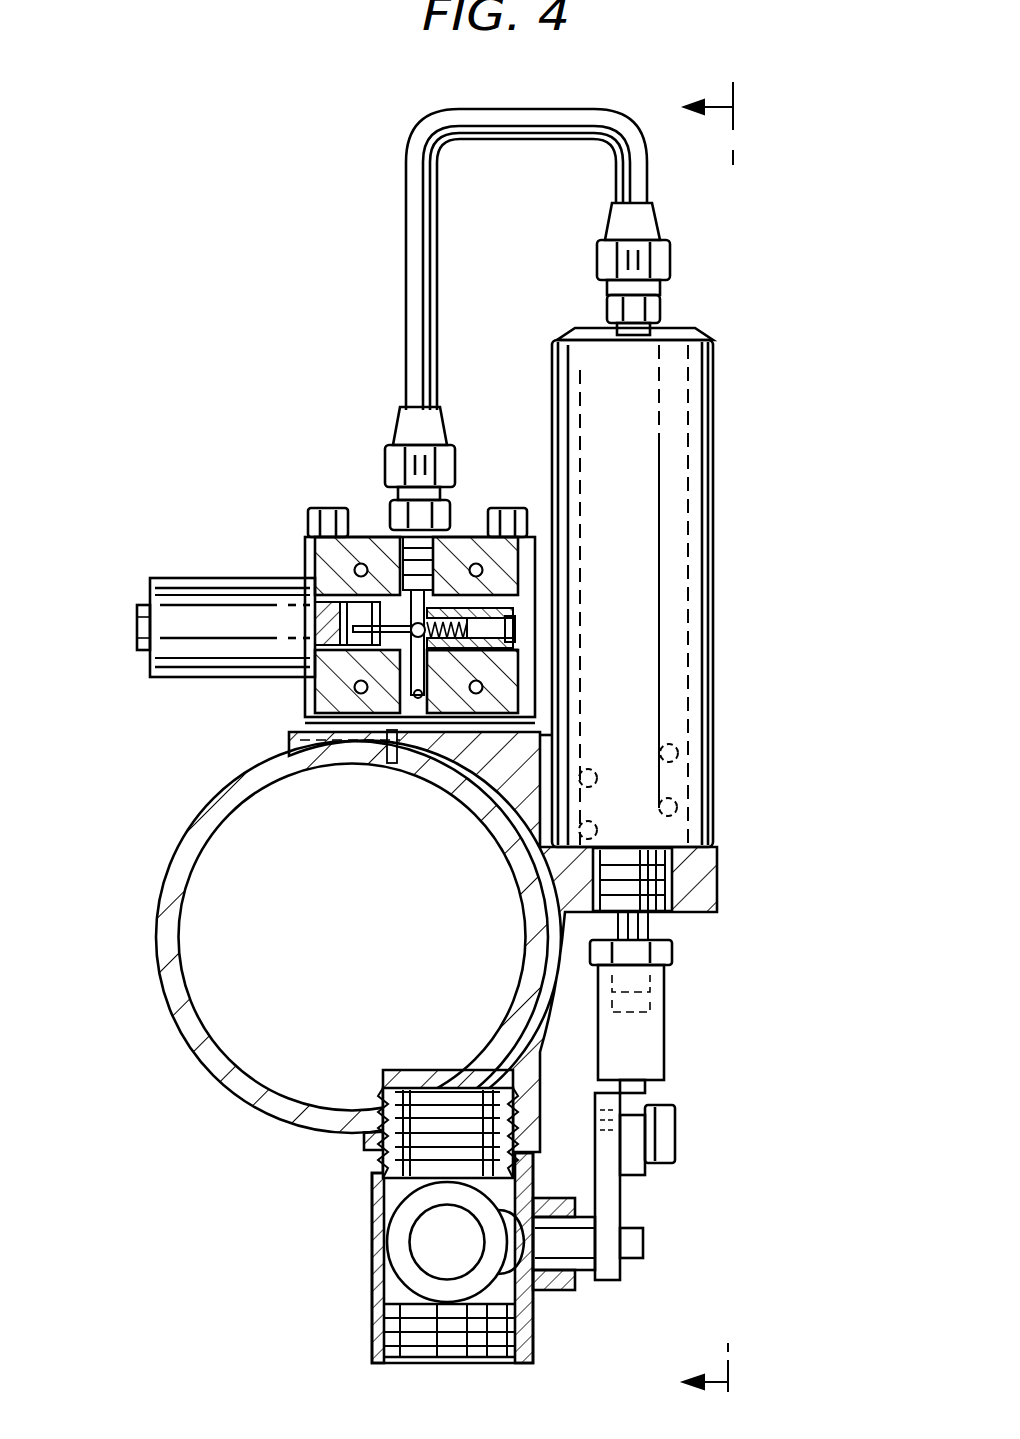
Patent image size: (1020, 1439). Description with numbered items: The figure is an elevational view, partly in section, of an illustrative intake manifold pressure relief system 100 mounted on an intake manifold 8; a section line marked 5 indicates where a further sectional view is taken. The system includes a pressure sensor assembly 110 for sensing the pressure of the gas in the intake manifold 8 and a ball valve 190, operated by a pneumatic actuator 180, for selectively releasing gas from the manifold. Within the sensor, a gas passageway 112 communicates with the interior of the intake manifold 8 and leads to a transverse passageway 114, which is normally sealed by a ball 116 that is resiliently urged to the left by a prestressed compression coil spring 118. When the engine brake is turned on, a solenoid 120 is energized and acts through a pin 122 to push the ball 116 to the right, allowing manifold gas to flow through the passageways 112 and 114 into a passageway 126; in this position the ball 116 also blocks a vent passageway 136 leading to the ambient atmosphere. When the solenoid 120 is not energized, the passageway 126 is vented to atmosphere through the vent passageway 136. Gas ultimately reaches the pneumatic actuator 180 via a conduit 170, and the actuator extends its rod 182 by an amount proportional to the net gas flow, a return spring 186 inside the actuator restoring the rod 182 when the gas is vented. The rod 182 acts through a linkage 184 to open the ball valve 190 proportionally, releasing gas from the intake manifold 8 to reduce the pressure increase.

The section line 5- 5 is at (697, 740).
The intake manifold 8 is at (183, 1030).
The pressure relief system 100 is at (168, 298).
The pressure sensor assembly 110 is at (345, 455).
The gas passageway 112 is at (290, 722).
The transverse passageway 114 is at (398, 585).
The ball 116 is at (480, 675).
The prestressed compression coil spring 118 is at (424, 620).
The solenoid 120 is at (243, 645).
The pin 122 is at (330, 570).
The passageway 126 is at (542, 750).
The vent passageway 136 is at (506, 604).
The conduit 170 is at (412, 240).
The pneumatic actuator 180 is at (688, 628).
The rod 182 is at (650, 922).
The linkage 184 is at (613, 1196).
The return spring 186 is at (672, 753).
The ball valve 190 is at (398, 1244).